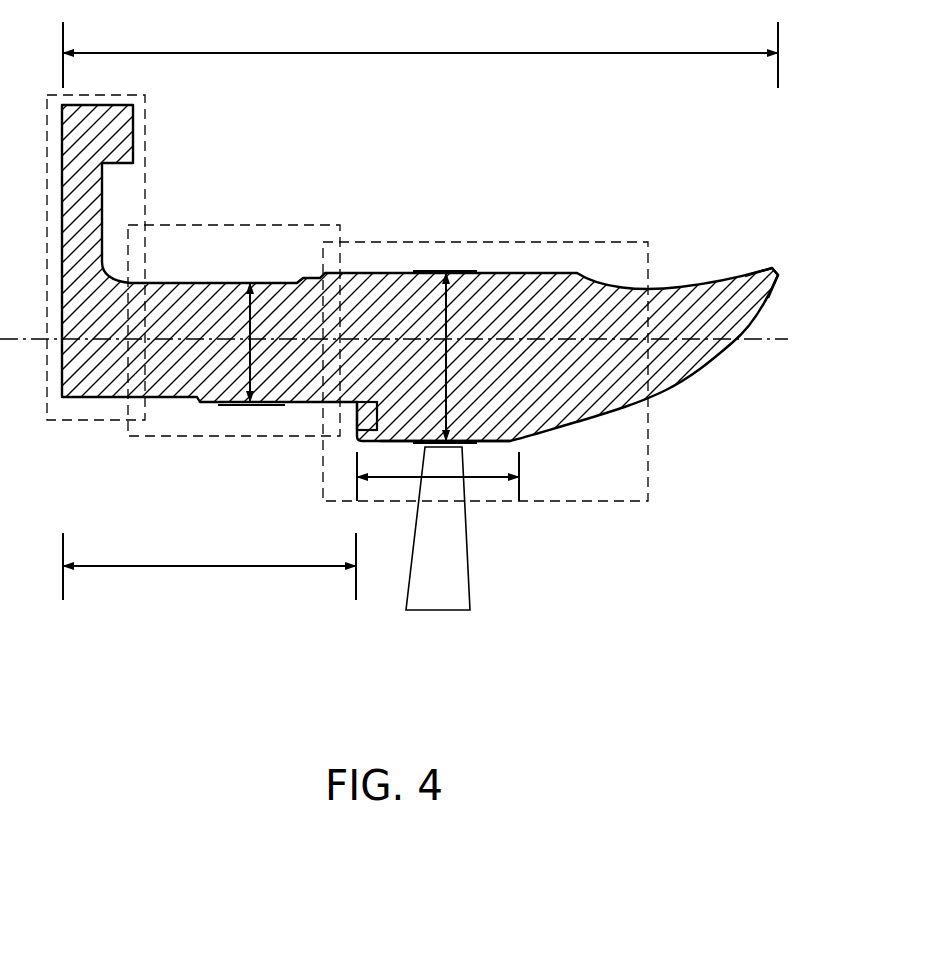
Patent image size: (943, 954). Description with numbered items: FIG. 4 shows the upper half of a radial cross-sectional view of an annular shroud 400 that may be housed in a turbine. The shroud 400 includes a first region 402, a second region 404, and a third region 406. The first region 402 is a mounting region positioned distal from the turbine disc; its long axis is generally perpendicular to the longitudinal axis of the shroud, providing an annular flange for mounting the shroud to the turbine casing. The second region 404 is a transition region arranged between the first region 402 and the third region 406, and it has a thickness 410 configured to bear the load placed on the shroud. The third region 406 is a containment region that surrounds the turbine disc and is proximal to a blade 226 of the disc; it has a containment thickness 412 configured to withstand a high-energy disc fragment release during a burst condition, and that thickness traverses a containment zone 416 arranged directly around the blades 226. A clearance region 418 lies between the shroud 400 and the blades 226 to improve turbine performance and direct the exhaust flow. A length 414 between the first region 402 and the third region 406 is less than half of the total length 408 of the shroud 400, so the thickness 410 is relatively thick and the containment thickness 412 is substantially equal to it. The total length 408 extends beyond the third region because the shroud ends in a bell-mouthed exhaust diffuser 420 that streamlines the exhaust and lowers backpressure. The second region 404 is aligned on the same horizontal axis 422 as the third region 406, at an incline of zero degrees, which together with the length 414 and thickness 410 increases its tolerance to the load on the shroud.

The shroud 400 is at (716, 224).
The first region 402 is at (150, 102).
The second region 404 is at (246, 225).
The third region 406 is at (565, 241).
The total length 408 is at (453, 57).
The thickness 410 is at (253, 283).
The containment thickness 412 is at (465, 272).
The length 414 is at (225, 565).
The containment zone 416 is at (521, 466).
The clearance region 418 is at (420, 443).
The exhaust diffuser 420 is at (778, 271).
The horizontal axis 422 is at (781, 341).
The blade 226 is at (466, 541).